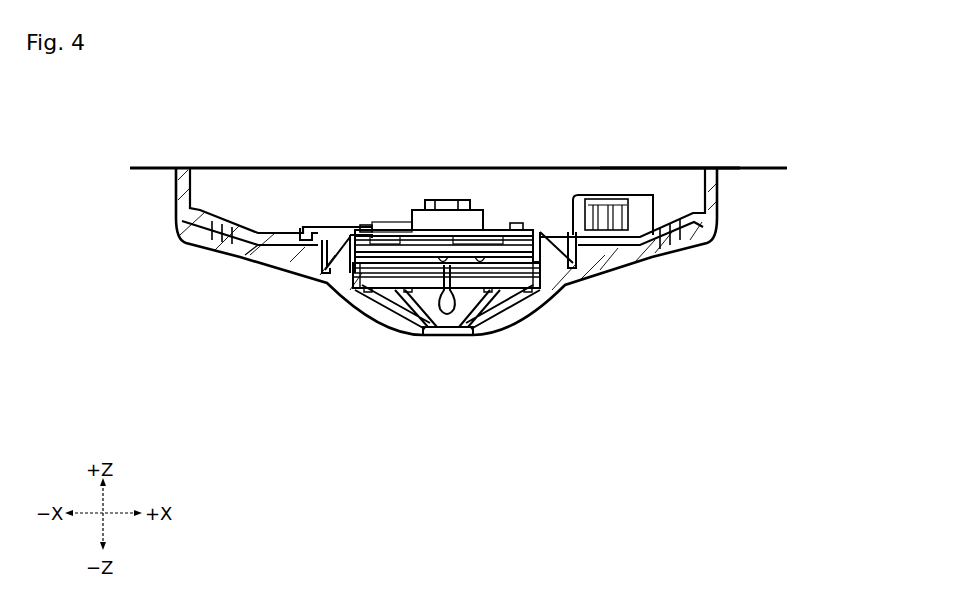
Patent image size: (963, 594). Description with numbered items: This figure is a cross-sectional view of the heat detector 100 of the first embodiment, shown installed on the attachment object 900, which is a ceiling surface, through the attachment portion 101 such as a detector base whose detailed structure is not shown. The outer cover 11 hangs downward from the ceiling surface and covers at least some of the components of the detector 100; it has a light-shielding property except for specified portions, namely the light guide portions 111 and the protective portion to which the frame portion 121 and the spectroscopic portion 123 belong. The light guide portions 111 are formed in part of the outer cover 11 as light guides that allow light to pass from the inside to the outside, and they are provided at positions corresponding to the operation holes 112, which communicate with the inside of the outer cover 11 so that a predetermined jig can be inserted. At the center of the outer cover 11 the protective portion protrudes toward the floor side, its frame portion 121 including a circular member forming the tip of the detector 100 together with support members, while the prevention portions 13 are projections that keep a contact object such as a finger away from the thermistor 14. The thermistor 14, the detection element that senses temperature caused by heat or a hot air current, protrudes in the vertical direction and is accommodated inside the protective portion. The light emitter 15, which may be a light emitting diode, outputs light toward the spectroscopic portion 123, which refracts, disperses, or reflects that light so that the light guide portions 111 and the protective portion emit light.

The detector 100 is at (680, 337).
The attachment object 900 is at (763, 170).
The attachment portion 101 is at (672, 167).
The outer cover 11 is at (655, 262).
The light guide portions 111 is at (255, 252).
The operation holes 112 is at (207, 250).
The frame portion 121 is at (403, 322).
The spectroscopic portion 123 is at (332, 233).
The prevention portions 13 is at (402, 283).
The thermistor 14 is at (475, 333).
The light emitter 15 is at (366, 232).